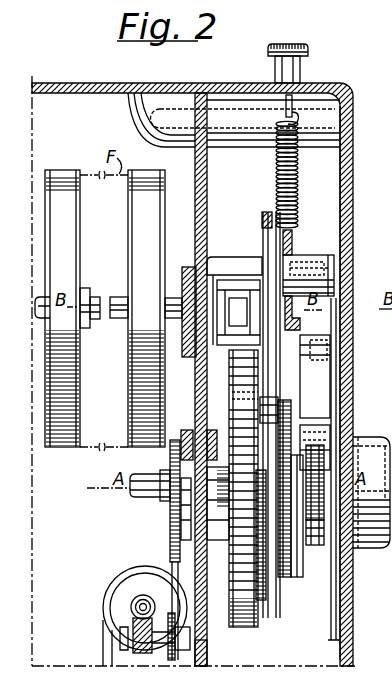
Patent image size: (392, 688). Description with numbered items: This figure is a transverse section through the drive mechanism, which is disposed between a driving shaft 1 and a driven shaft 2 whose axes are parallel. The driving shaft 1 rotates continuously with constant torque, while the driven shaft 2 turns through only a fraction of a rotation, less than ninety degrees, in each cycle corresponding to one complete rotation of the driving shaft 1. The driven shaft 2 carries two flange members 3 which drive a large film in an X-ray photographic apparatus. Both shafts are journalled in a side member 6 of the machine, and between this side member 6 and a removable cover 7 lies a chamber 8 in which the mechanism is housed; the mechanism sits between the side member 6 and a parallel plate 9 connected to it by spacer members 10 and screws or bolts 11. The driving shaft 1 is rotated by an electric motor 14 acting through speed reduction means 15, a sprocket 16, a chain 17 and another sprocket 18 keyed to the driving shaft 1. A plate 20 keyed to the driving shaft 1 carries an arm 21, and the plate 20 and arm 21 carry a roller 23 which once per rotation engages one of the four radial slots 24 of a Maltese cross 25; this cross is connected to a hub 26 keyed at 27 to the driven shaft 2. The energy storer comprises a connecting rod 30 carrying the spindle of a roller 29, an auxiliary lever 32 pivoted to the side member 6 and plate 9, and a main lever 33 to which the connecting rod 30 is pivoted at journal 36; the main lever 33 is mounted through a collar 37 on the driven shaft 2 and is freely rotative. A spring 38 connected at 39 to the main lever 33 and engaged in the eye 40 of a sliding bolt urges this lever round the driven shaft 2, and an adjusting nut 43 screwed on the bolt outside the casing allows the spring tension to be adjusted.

The driving shaft 1 is at (140, 475).
The driven shaft 2 is at (115, 302).
The flange members 3 is at (143, 263).
The side member 6 is at (203, 208).
The removable cover 7 is at (352, 264).
The chamber 8 is at (331, 201).
The plate 9 is at (331, 380).
The spacer members 10 is at (224, 262).
The screws or bolts 11 is at (320, 256).
The electric motor 14 is at (143, 577).
The speed reduction means 15 is at (138, 602).
The sprocket 16 is at (198, 652).
The chain 17 is at (172, 549).
The sprocket 18 is at (172, 522).
The plate 20 is at (246, 377).
The arm 21 is at (290, 417).
The roller 23 is at (263, 412).
The radial slots 24 is at (264, 223).
The Maltese cross 25 is at (268, 250).
The hub 26 is at (258, 282).
The key 27 is at (264, 598).
The roller 29 is at (322, 432).
The connecting rod 30 is at (314, 538).
The auxiliary lever 32 is at (318, 554).
The main lever 33 is at (288, 266).
The journal 36 is at (296, 362).
The collar 37 is at (297, 315).
The spring 38 is at (276, 187).
The spring connection 39 is at (291, 247).
The eye 40 is at (284, 113).
The adjusting nut 43 is at (270, 65).